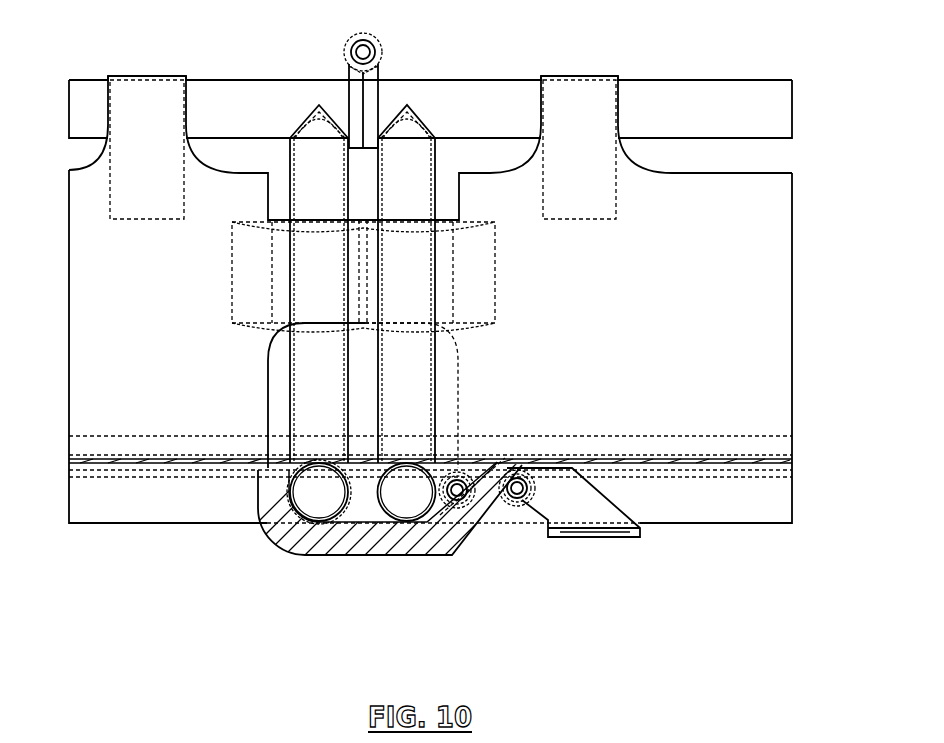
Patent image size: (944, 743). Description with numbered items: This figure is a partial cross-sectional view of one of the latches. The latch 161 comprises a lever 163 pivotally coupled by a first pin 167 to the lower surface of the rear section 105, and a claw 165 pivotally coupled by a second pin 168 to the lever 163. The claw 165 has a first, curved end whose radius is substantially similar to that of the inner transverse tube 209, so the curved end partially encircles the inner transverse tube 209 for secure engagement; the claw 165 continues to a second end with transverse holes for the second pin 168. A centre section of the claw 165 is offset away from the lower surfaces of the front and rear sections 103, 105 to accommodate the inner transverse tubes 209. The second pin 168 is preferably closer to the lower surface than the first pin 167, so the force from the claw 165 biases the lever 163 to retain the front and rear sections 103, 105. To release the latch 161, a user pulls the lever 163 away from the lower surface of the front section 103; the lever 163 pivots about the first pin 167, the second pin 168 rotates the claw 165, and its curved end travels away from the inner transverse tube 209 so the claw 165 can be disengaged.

The front section 103 is at (96, 68).
The rear section 105 is at (797, 68).
The inner transverse tube 209 is at (317, 488).
The latch 161 is at (437, 521).
The lever 163 is at (582, 513).
The claw 165 is at (306, 548).
The first pin 167 is at (458, 486).
The second pin 168 is at (517, 484).